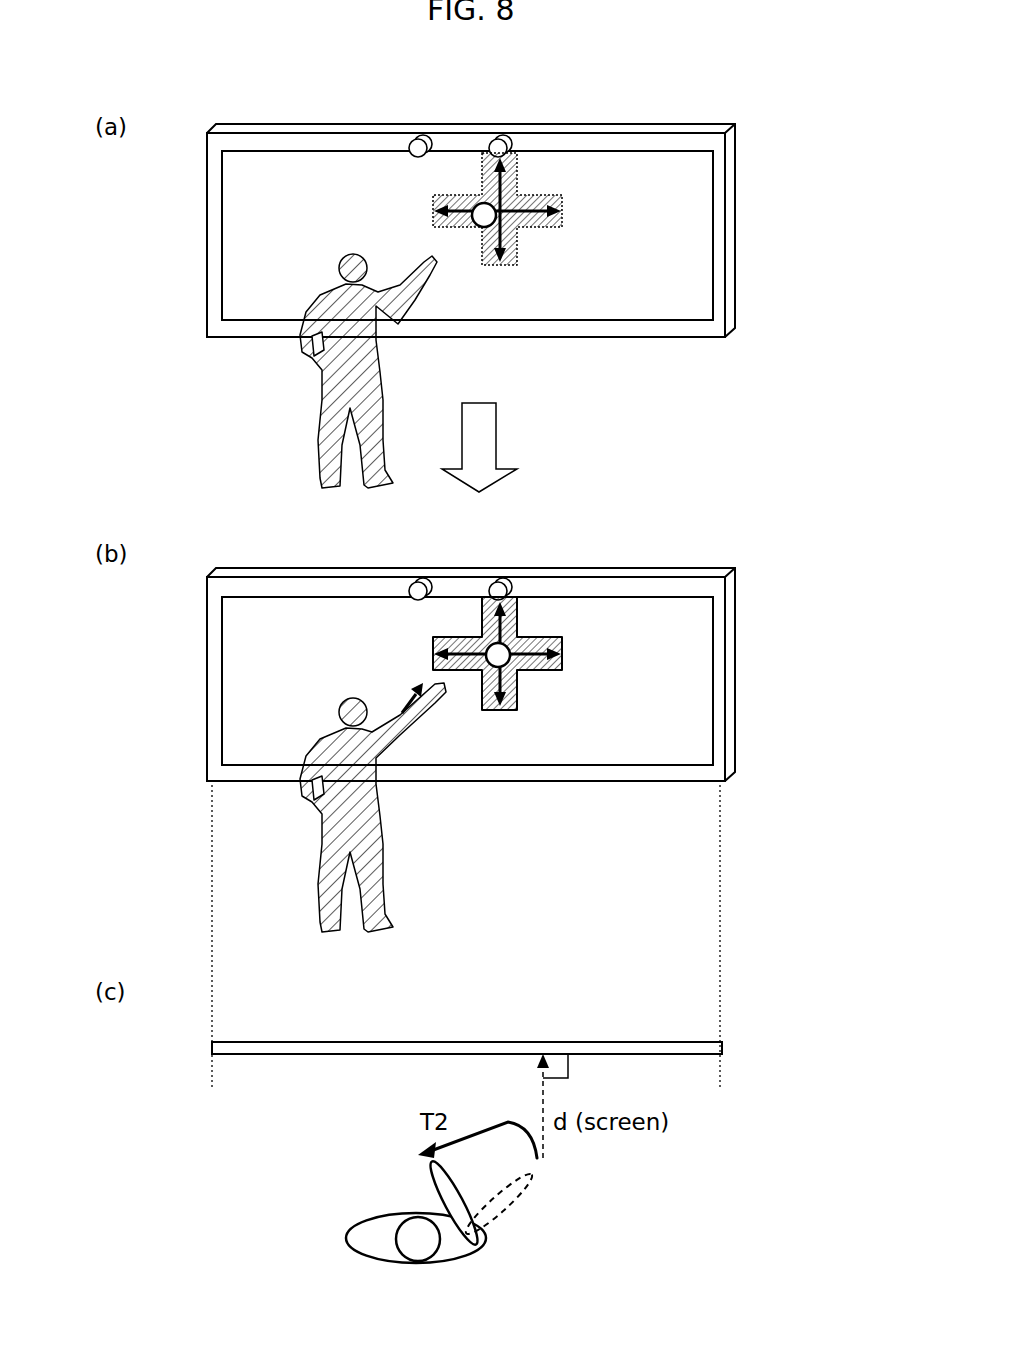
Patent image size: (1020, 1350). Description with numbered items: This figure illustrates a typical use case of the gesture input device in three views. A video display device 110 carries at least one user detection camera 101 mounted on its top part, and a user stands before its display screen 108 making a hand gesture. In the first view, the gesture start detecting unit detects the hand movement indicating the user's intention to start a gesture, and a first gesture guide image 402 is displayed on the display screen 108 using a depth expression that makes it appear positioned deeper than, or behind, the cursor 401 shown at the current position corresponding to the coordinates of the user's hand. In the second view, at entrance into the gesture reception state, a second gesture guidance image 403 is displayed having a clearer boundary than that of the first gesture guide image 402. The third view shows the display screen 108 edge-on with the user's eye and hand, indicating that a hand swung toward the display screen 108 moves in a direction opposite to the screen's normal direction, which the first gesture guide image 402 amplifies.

The user detection camera 101 is at (493, 140).
The display screen 108 is at (232, 218).
The video display device 110 is at (663, 118).
The cursor 401 is at (457, 196).
The first gesture guide image 402 is at (565, 203).
The second gesture guidance image 403 is at (565, 648).